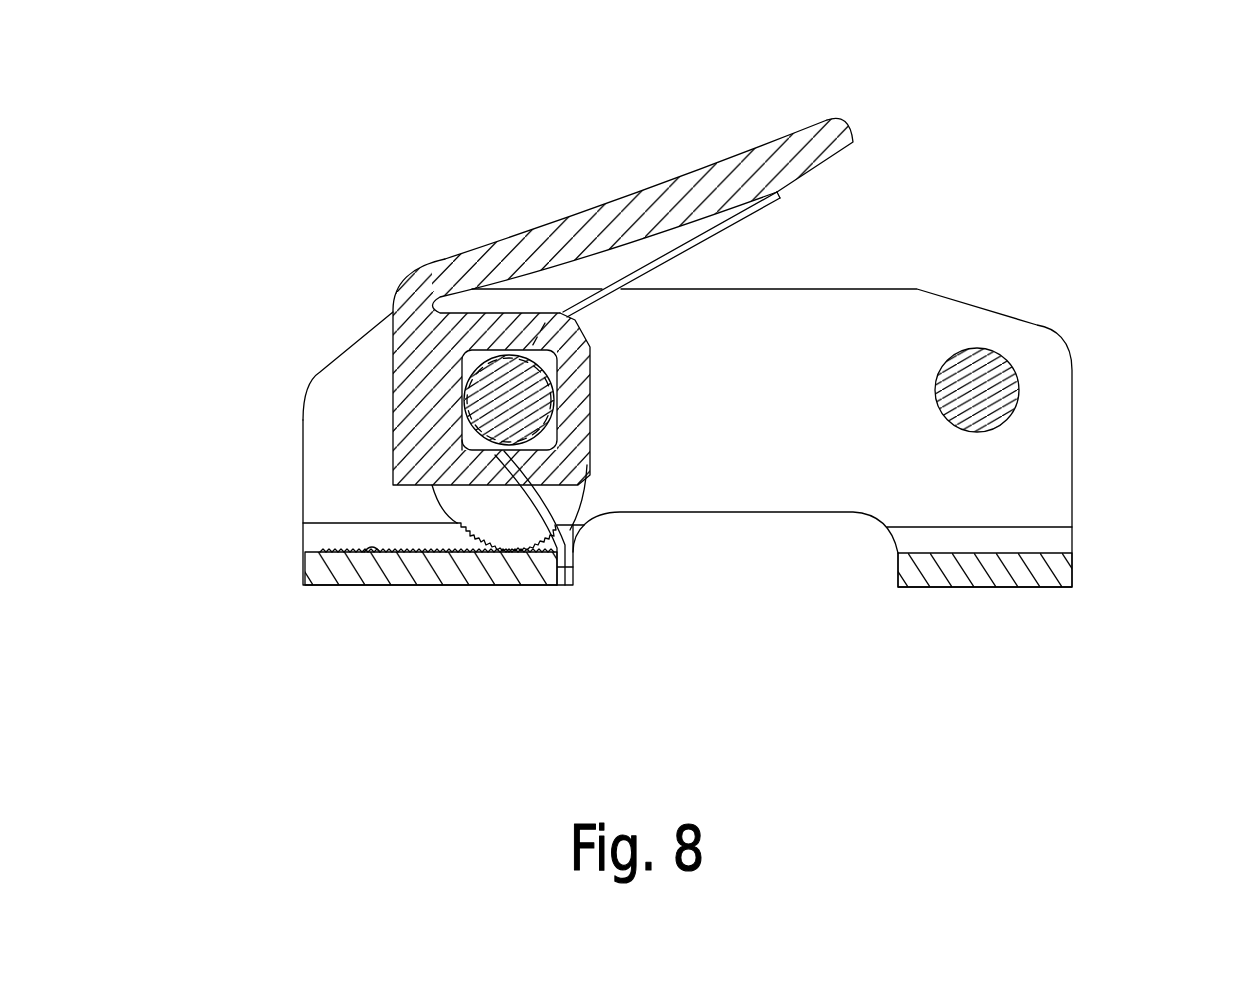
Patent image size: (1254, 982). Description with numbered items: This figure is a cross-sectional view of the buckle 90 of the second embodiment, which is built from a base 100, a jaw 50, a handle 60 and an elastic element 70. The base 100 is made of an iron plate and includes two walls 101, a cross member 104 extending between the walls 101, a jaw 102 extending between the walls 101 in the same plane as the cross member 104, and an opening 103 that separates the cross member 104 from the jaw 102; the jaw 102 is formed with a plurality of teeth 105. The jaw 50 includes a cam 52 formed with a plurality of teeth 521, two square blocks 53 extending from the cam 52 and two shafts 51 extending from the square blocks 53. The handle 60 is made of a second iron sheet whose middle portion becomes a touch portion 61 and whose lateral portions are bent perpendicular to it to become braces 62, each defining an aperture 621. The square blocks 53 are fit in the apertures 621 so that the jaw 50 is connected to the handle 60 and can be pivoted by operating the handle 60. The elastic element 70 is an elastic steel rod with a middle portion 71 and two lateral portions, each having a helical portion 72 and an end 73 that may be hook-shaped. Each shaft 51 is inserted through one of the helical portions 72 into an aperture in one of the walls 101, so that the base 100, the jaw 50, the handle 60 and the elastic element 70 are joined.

The jaw 50 is at (455, 540).
The shaft 51 is at (460, 407).
The cam 52 is at (565, 492).
The teeth 521 is at (498, 552).
The square block 53 is at (463, 450).
The handle 60 is at (710, 148).
The touch portion 61 is at (797, 160).
The brace 62 is at (423, 357).
The aperture 621 is at (477, 352).
The elastic element 70 is at (766, 226).
The middle portion 71 is at (780, 190).
The helical portion 72 is at (515, 325).
The end 73 is at (573, 587).
The buckle 90 is at (238, 451).
The base 100 is at (1103, 458).
The wall 101 is at (1047, 380).
The jaw 102 is at (315, 566).
The opening 103 is at (817, 543).
The cross member 104 is at (977, 572).
The teeth 105 is at (360, 550).